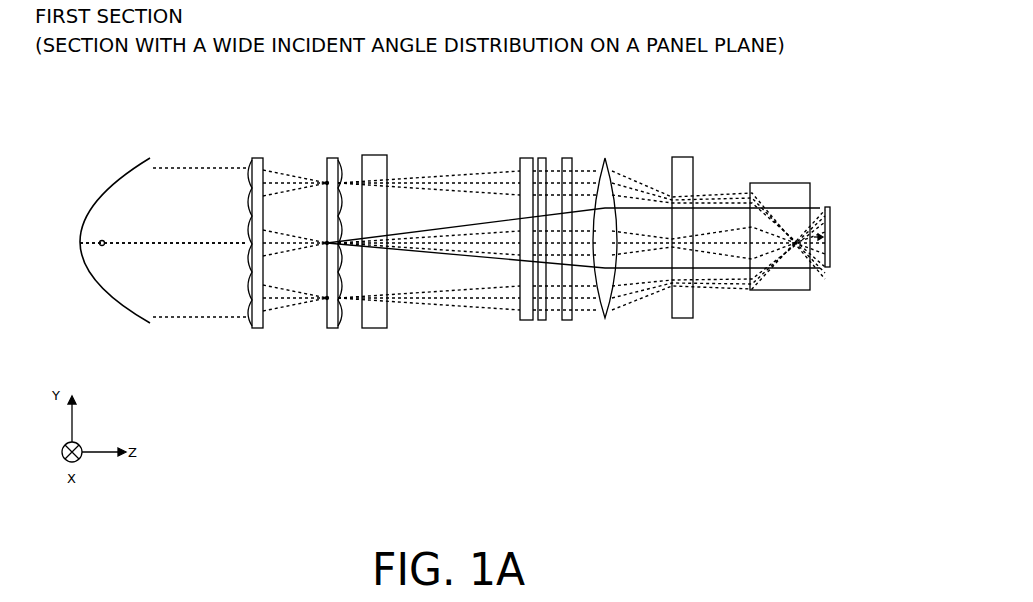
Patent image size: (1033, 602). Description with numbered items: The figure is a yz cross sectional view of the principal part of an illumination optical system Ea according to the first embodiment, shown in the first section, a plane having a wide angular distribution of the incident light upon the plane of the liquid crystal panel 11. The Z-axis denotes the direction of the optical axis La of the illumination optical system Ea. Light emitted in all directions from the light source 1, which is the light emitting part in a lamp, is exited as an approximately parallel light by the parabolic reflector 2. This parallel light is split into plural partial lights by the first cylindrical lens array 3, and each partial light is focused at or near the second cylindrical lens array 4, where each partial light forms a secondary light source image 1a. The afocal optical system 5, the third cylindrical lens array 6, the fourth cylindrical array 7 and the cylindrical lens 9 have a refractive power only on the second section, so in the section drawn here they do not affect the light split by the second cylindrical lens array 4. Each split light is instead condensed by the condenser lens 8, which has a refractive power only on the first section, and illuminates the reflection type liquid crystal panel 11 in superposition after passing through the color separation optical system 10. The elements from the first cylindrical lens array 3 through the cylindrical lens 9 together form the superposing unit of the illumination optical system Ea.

The light source 1 is at (101, 245).
The secondary light source image 1a is at (327, 243).
The parabolic reflector 2 is at (148, 323).
The optical axis La is at (182, 243).
The first cylindrical lens array 3 is at (257, 330).
The second cylindrical lens array 4 is at (332, 322).
The afocal optical system 5 is at (530, 313).
The third cylindrical lens array 6 is at (542, 320).
The fourth cylindrical array 7 is at (567, 320).
The condenser lens 8 is at (605, 318).
The cylindrical lens 9 is at (687, 310).
The color separation optical system 10 is at (785, 285).
The liquid crystal panel 11 is at (828, 267).
The illumination optical system Ea is at (535, 145).